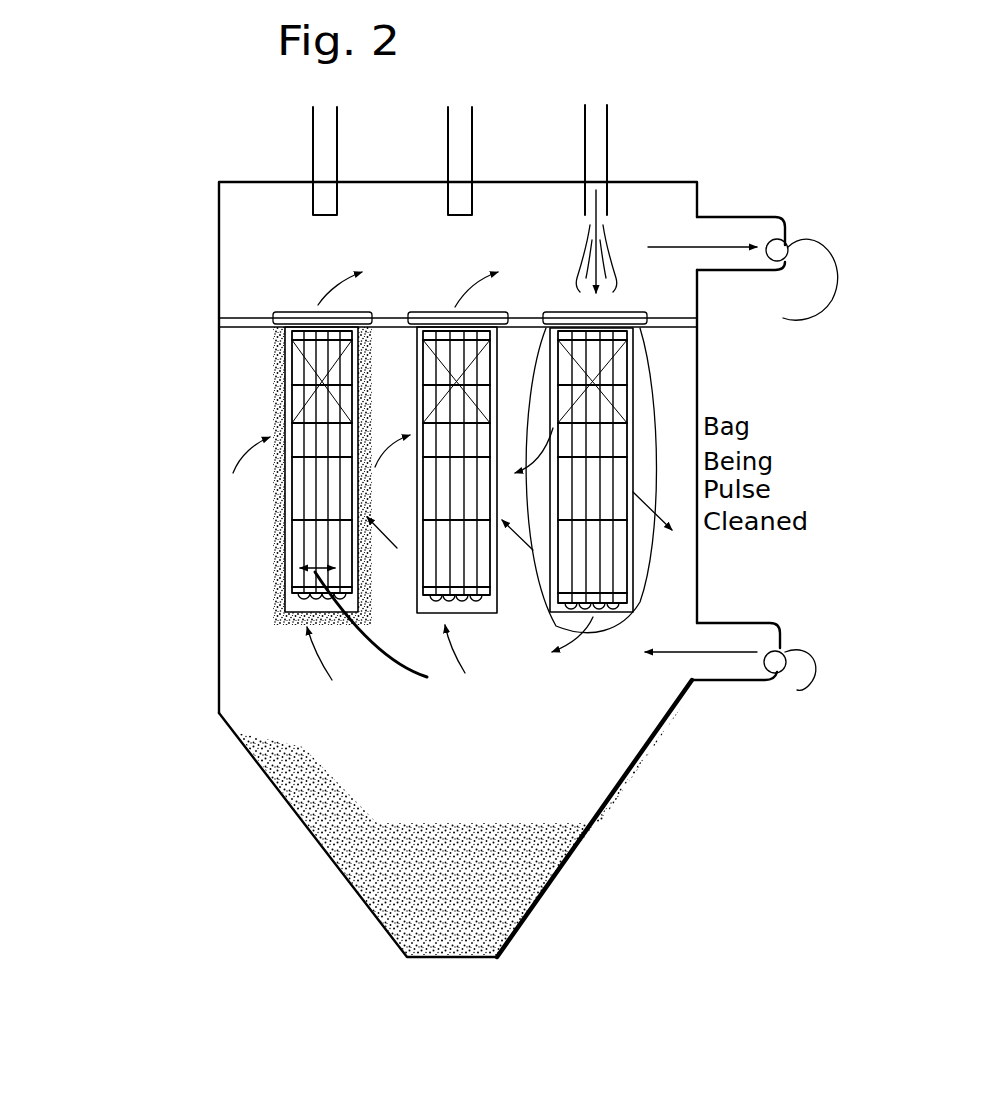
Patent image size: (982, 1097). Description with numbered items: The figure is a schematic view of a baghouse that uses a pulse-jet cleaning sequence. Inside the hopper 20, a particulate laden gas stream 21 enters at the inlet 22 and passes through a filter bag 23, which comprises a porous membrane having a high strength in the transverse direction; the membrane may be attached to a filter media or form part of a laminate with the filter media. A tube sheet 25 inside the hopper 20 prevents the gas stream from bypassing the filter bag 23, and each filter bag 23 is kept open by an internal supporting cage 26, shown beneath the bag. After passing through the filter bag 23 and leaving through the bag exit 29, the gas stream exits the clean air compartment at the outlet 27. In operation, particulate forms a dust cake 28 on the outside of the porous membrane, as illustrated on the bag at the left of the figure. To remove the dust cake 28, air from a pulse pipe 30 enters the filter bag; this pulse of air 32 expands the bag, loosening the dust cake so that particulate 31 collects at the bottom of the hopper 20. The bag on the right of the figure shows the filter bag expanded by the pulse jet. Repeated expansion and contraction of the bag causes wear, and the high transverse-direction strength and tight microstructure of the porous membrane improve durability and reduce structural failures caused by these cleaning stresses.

The hopper 20 is at (297, 723).
The particulate laden gas stream 21 is at (737, 724).
The inlet 22 is at (722, 640).
The filter bag 23 is at (275, 403).
The tube sheet 25 is at (240, 327).
The internal supporting cage 26 is at (273, 543).
The outlet 27 is at (732, 235).
The dust cake 28 is at (275, 612).
The bag exit 29 is at (318, 305).
The pulse pipe 30 is at (615, 183).
The particulate 31 is at (565, 878).
The pulse of air 32 is at (610, 243).